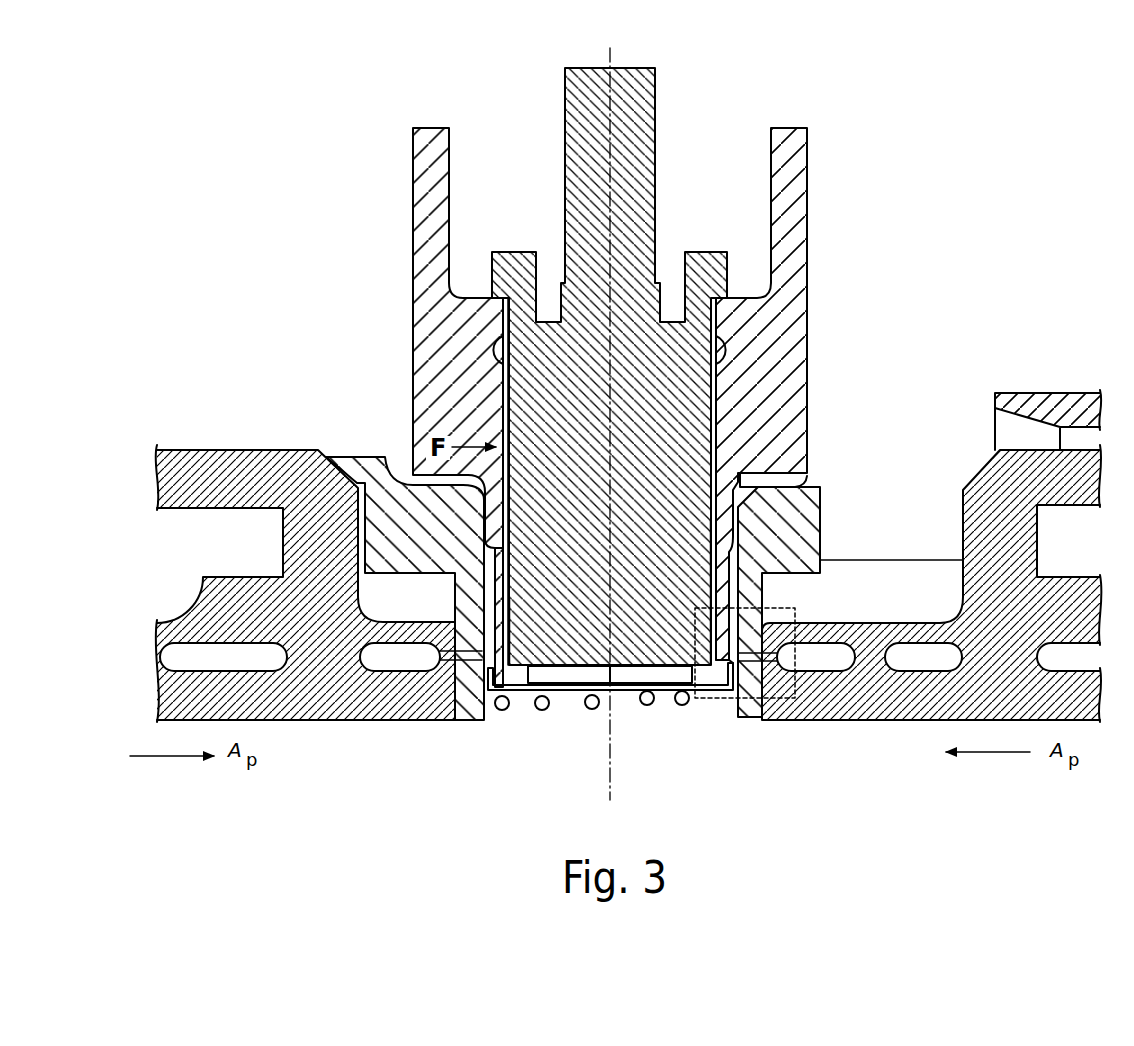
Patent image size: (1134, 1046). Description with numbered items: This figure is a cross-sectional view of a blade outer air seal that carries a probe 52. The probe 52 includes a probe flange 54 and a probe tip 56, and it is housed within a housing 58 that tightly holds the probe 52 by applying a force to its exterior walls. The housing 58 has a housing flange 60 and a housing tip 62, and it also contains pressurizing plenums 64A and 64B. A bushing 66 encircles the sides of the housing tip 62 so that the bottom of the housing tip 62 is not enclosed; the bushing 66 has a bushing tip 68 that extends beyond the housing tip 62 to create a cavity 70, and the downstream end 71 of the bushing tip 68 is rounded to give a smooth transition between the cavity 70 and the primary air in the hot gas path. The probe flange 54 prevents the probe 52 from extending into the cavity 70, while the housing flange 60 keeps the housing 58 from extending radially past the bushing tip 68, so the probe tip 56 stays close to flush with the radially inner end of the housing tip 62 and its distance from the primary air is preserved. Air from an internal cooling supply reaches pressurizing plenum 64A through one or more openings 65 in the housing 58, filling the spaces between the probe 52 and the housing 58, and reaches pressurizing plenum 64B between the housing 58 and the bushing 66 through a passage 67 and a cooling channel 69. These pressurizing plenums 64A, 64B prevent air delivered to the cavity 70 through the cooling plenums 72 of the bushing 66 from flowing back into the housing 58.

The probe 52 is at (627, 228).
The probe flange 54 is at (728, 280).
The probe tip 56 is at (668, 679).
The housing 58 is at (447, 351).
The housing flange 60 is at (783, 480).
The housing tip 62 is at (496, 583).
The pressurizing plenum 64A is at (711, 520).
The pressurizing plenum 64B is at (510, 625).
The opening 65 is at (491, 352).
The bushing 66 is at (802, 537).
The passage 67 is at (415, 482).
The bushing tip 68 is at (747, 705).
The cooling channel 69 is at (468, 657).
The cavity 70 is at (561, 702).
The downstream end 71 is at (737, 692).
The cooling plenum 72 is at (488, 717).